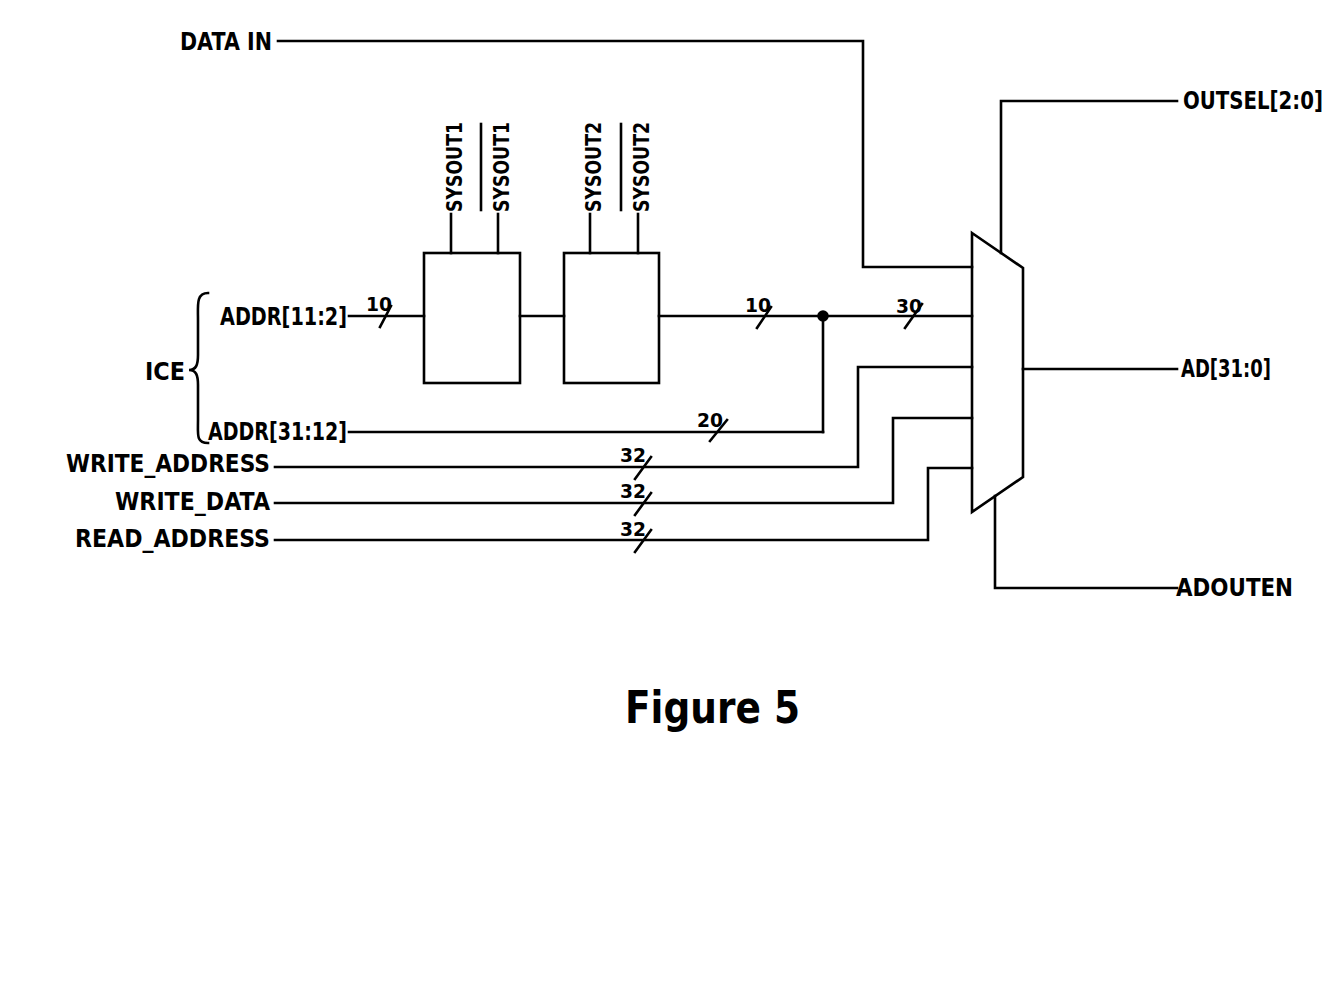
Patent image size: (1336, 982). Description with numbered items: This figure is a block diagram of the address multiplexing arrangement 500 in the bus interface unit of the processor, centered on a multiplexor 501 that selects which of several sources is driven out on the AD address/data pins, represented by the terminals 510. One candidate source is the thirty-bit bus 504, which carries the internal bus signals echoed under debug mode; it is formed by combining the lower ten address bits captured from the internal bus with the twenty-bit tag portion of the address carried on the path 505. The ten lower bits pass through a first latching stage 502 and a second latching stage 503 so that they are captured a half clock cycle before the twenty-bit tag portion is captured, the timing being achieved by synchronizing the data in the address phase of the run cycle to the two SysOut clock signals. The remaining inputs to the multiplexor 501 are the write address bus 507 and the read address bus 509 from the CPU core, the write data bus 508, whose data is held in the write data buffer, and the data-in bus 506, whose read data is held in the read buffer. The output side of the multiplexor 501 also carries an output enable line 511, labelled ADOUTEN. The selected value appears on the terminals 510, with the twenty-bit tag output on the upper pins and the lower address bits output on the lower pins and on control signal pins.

The address multiplexing circuit 500 is at (881, 653).
The multiplexor 501 is at (1025, 306).
The first flip-flop register 502 is at (489, 378).
The second flip-flop register 503 is at (628, 378).
The 30-bit bus 504 is at (678, 316).
The ADDR[31:12] bus / OUTSEL[2:0] select line 505 is at (743, 432).
The data_in bus 506 is at (523, 41).
The write_address bus 507 is at (770, 467).
The write_data bus 508 is at (803, 503).
The read_address bus 509 is at (823, 540).
The AD[31:0] terminals 510 is at (1078, 369).
The ADOUTEN output enable line 511 is at (1075, 588).